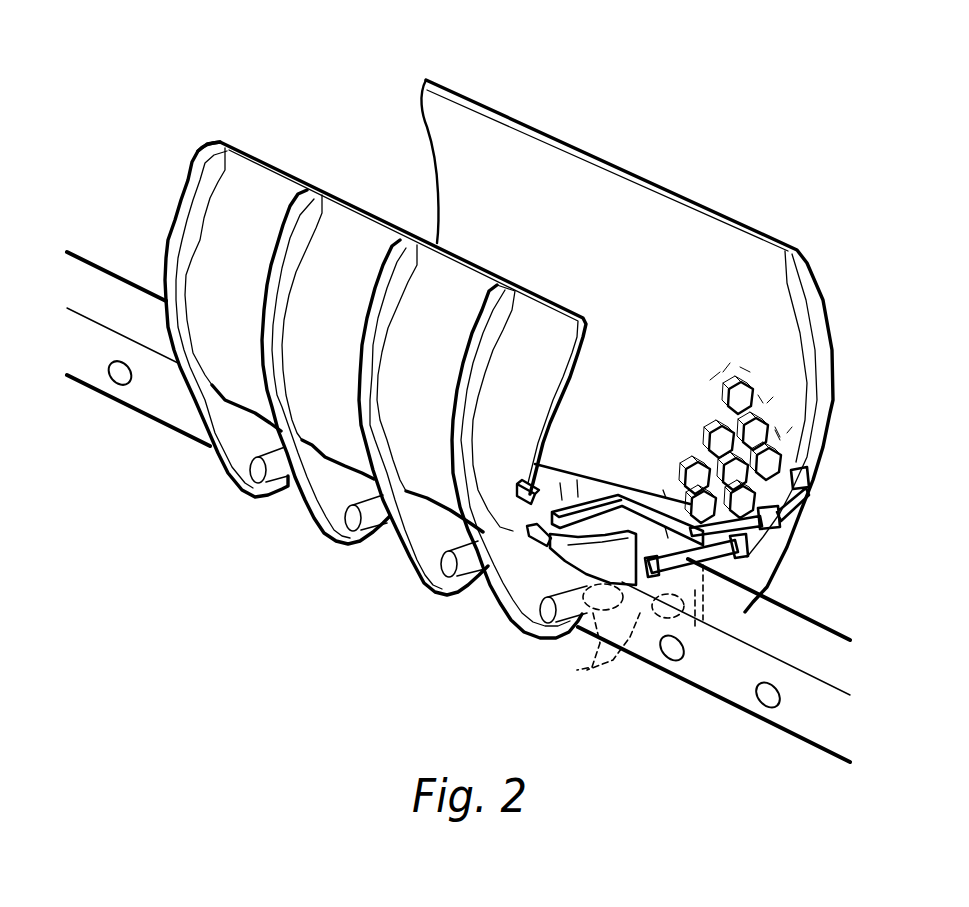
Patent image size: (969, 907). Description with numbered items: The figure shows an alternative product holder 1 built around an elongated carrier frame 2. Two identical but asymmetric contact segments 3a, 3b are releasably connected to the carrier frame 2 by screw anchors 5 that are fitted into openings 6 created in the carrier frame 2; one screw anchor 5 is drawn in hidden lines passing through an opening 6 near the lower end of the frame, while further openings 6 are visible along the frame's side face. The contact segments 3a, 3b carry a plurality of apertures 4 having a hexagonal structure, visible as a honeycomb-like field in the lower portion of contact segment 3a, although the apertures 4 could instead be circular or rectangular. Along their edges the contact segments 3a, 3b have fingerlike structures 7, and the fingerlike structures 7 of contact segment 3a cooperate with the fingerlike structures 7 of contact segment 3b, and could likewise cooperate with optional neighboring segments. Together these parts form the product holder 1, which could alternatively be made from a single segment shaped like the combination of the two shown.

The product holder 1 is at (768, 133).
The carrier frame 2 is at (738, 670).
The contact segment 3a is at (568, 190).
The contact segment 3b is at (257, 197).
The apertures 4 is at (695, 482).
The screw anchors 5 is at (634, 628).
The openings 6 is at (113, 374).
The fingerlike structures 7 is at (607, 535).